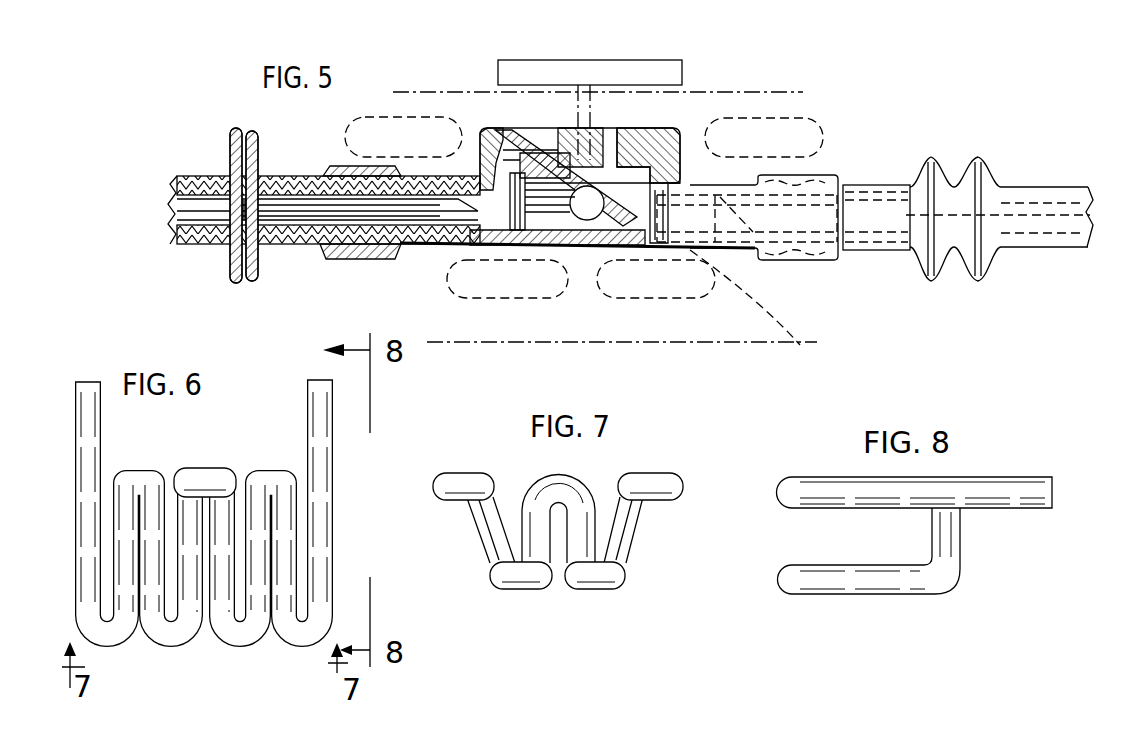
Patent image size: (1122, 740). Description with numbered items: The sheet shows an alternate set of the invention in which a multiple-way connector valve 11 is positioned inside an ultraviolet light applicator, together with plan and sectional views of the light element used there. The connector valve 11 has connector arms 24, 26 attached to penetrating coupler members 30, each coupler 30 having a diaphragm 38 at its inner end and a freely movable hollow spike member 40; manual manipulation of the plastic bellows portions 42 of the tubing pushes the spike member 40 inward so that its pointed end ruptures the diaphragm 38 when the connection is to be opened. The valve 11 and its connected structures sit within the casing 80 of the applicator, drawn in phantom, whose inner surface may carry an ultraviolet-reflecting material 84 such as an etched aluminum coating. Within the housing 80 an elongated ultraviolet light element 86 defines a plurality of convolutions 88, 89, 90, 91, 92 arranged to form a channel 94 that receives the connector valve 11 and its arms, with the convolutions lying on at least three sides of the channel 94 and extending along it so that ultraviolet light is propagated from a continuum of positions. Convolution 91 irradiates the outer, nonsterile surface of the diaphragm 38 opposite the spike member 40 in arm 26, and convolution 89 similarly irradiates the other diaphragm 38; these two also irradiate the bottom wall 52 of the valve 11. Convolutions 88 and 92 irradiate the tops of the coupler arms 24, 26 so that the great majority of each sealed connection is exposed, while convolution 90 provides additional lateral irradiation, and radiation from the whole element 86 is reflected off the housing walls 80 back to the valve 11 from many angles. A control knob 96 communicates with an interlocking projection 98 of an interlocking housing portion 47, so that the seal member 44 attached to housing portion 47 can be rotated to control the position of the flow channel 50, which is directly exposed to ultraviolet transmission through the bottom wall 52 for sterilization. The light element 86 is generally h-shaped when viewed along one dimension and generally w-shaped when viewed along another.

In FIG. 5, the connector valve 11 is at (587, 246).
In FIG. 5, the connector arm 24 is at (407, 262).
In FIG. 5, the connector arm 26 is at (743, 254).
In FIG. 5, the penetrating coupler 30 is at (282, 245).
In FIG. 5, the diaphragm 38 is at (713, 213).
In FIG. 5, the hollow spike member 40 is at (303, 176).
In FIG. 5, the plastic bellows portion 42 is at (259, 132).
In FIG. 5, the seal member 44 is at (660, 197).
In FIG. 5, the interlocking housing portion 47 is at (507, 127).
In FIG. 5, the flow channel 50 is at (580, 205).
In FIG. 5, the bottom wall 52 is at (550, 245).
In FIG. 5, the casing 80 is at (770, 75).
In FIG. 5, the ultraviolet-reflecting material 84 is at (428, 86).
In FIG. 6, the elongated ultraviolet light element 86 is at (337, 522).
In FIG. 8, the elongated ultraviolet light element 86 is at (962, 556).
In FIG. 5, the convolution 88 is at (373, 113).
In FIG. 6, the convolution 88 is at (108, 648).
In FIG. 7, the convolution 88 is at (467, 478).
In FIG. 5, the convolution 89 is at (493, 283).
In FIG. 6, the convolution 89 is at (163, 648).
In FIG. 7, the convolution 89 is at (521, 589).
In FIG. 6, the convolution 90 is at (202, 477).
In FIG. 7, the convolution 90 is at (558, 483).
In FIG. 5, the convolution 91 is at (663, 285).
In FIG. 6, the convolution 91 is at (237, 648).
In FIG. 7, the convolution 91 is at (593, 589).
In FIG. 8, the convolution 91 is at (786, 595).
In FIG. 5, the convolution 92 is at (828, 117).
In FIG. 6, the convolution 92 is at (296, 648).
In FIG. 7, the convolution 92 is at (653, 487).
In FIG. 8, the convolution 92 is at (790, 488).
In FIG. 5, the channel 94 is at (800, 345).
In FIG. 7, the channel 94 is at (492, 527).
In FIG. 8, the channel 94 is at (827, 530).
In FIG. 5, the control knob 96 is at (665, 73).
In FIG. 5, the interlocking projection 98 is at (558, 127).